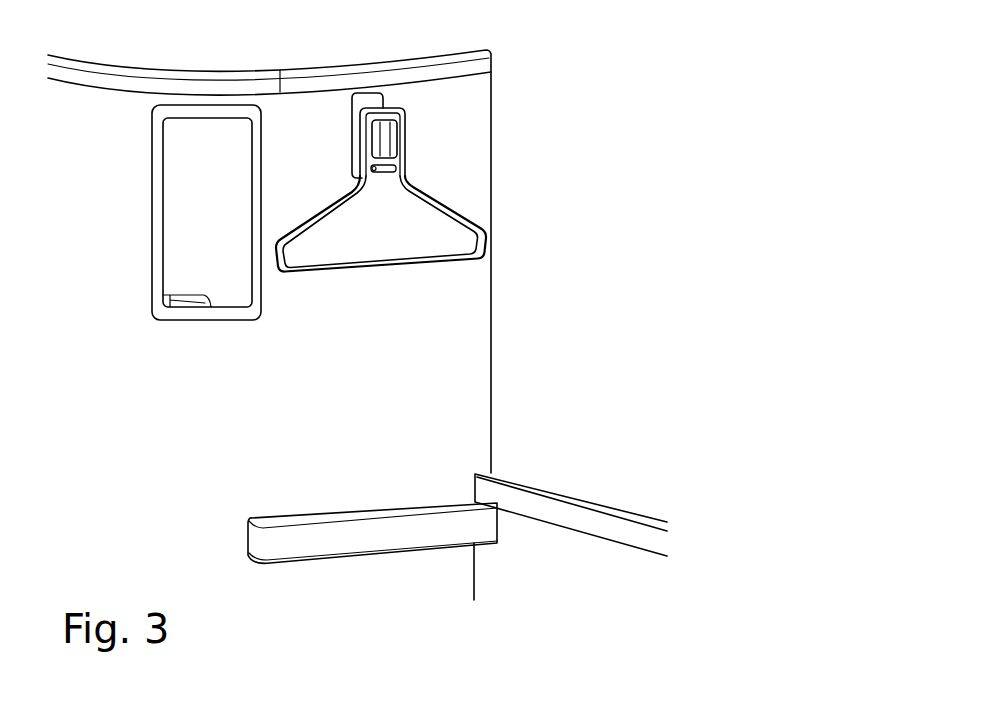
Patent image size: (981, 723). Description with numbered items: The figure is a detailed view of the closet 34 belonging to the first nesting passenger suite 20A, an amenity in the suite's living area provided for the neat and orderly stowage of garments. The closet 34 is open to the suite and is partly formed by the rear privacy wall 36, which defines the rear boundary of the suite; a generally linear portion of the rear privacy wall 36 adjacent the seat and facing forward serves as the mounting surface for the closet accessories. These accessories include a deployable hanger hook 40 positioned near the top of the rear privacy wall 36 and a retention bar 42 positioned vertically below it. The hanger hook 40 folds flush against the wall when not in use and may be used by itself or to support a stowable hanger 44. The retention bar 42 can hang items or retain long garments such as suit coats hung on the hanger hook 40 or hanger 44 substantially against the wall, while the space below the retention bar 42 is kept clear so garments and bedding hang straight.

The first nesting passenger suite 20A is at (612, 0).
The closet 34 is at (543, 217).
The rear privacy wall 36 is at (448, 100).
The deployable hanger hook 40 is at (370, 167).
The retention bar 42 is at (423, 525).
The stowable hanger 44 is at (447, 203).